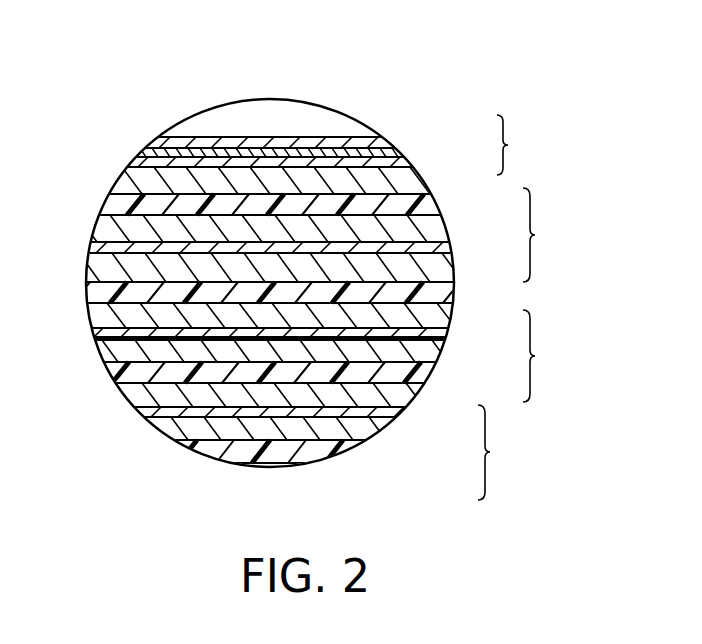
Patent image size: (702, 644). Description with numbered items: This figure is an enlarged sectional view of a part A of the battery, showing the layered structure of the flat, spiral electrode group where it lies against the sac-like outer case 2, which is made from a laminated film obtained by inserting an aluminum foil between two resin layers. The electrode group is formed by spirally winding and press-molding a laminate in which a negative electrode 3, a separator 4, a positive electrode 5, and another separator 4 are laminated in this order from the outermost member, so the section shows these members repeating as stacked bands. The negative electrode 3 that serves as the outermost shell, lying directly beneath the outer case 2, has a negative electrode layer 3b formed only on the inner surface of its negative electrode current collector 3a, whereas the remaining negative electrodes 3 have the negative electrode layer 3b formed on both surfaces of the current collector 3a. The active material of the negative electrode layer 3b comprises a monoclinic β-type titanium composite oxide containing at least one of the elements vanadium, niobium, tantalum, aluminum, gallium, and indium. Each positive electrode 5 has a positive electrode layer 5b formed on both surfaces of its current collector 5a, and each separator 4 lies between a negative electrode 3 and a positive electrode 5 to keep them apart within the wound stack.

The part A is at (187, 128).
The outer case 2 is at (390, 140).
The negative electrode 3 is at (525, 258).
The negative electrode current collector 3a is at (408, 160).
The negative electrode layer 3b is at (407, 181).
The separator 4 is at (112, 203).
The positive electrode 5 is at (515, 344).
The current collector 5a is at (433, 250).
The positive electrode layer 5b is at (433, 222).